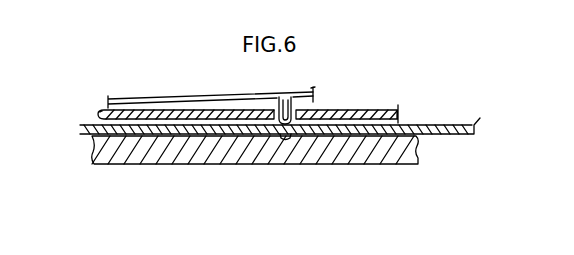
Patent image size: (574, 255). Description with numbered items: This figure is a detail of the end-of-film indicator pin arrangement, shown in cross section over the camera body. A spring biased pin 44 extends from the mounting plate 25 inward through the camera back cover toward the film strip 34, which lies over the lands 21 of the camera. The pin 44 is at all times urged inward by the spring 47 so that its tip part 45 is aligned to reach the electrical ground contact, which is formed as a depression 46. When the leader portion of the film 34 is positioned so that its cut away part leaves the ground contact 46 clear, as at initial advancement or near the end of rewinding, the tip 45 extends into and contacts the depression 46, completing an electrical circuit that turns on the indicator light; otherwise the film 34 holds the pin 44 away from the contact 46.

The lands 21 is at (356, 150).
The mounting plate 25 is at (376, 110).
The strip of film 34 is at (443, 123).
The spring biased pin 44 is at (282, 100).
The tip part 45 is at (314, 96).
The ground contact 46 is at (285, 139).
The spring 47 is at (180, 100).